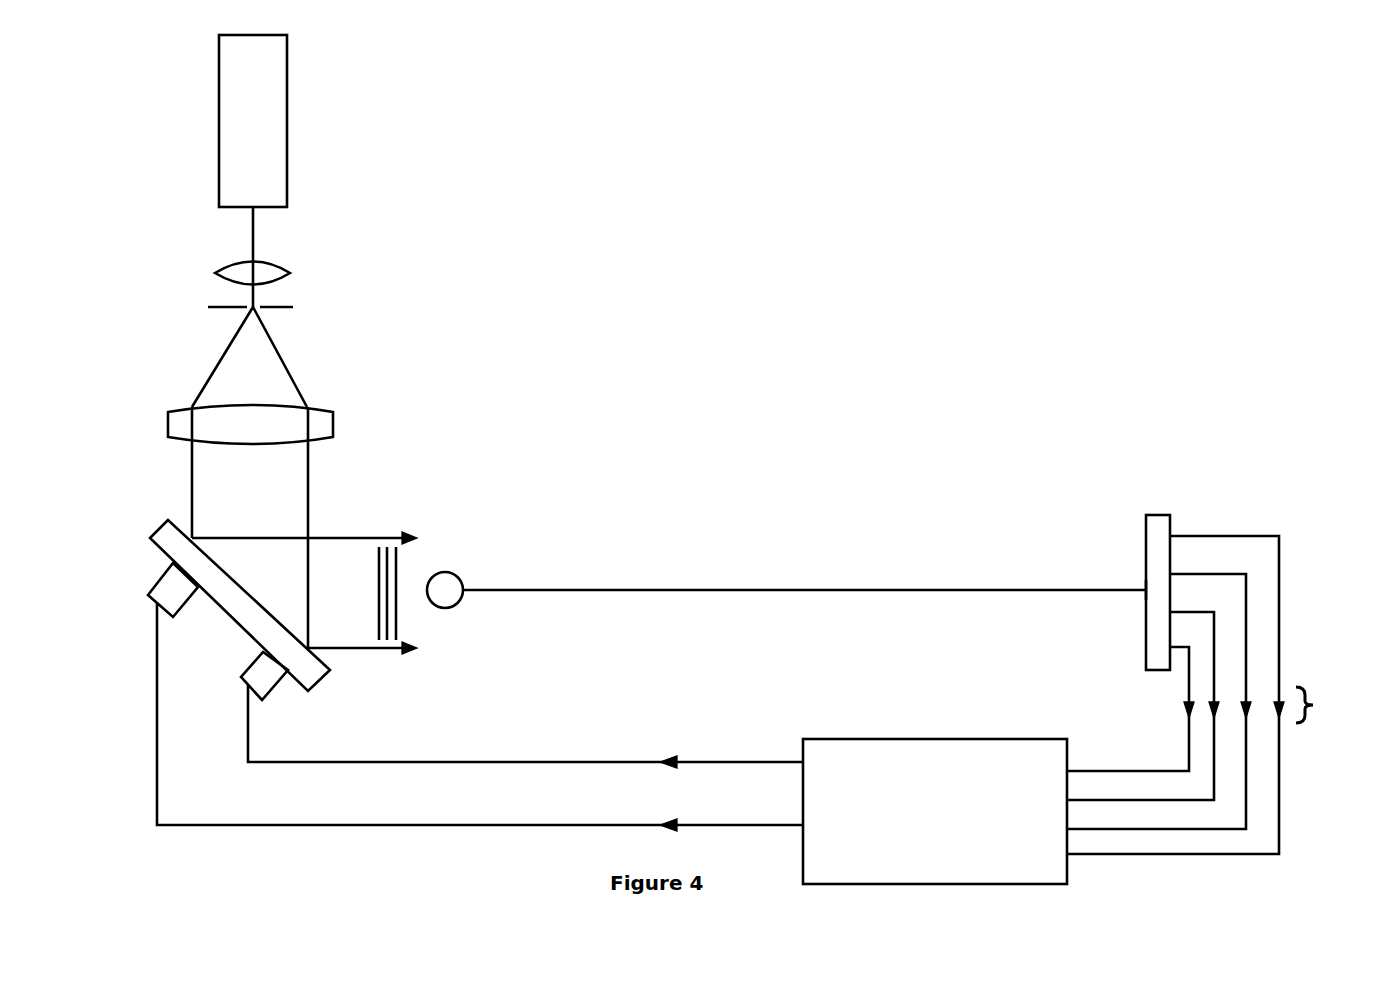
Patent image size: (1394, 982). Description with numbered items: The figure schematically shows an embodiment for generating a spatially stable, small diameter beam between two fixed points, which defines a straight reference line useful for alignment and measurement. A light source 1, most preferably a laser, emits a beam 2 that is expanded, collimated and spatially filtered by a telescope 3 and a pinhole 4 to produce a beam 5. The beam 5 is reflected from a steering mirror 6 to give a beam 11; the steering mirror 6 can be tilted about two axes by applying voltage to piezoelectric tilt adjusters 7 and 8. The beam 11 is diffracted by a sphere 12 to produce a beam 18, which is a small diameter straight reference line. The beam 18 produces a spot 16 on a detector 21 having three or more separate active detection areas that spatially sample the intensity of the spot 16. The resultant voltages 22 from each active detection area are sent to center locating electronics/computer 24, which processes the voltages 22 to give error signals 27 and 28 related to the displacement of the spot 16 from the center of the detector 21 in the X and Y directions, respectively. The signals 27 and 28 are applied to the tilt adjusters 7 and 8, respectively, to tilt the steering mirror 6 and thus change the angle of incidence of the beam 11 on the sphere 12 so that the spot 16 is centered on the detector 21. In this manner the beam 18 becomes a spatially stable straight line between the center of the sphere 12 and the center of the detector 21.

The light source 1 is at (287, 77).
The beam 2 is at (254, 235).
The telescope 3 is at (217, 275).
The pinhole 4 is at (288, 303).
The beam 5 is at (308, 487).
The steering mirror 6 is at (318, 683).
The piezoelectric tilt adjuster 7 is at (190, 590).
The piezoelectric tilt adjuster 8 is at (250, 660).
The beam 11 is at (370, 538).
The sphere 12 is at (445, 572).
The spot 16 is at (1145, 588).
The beam 18 is at (598, 590).
The detector 21 is at (1157, 515).
The voltages 22 is at (1324, 698).
The center locating electronics/computer 24 is at (918, 739).
The error signal 27 is at (457, 826).
The error signal 28 is at (463, 762).